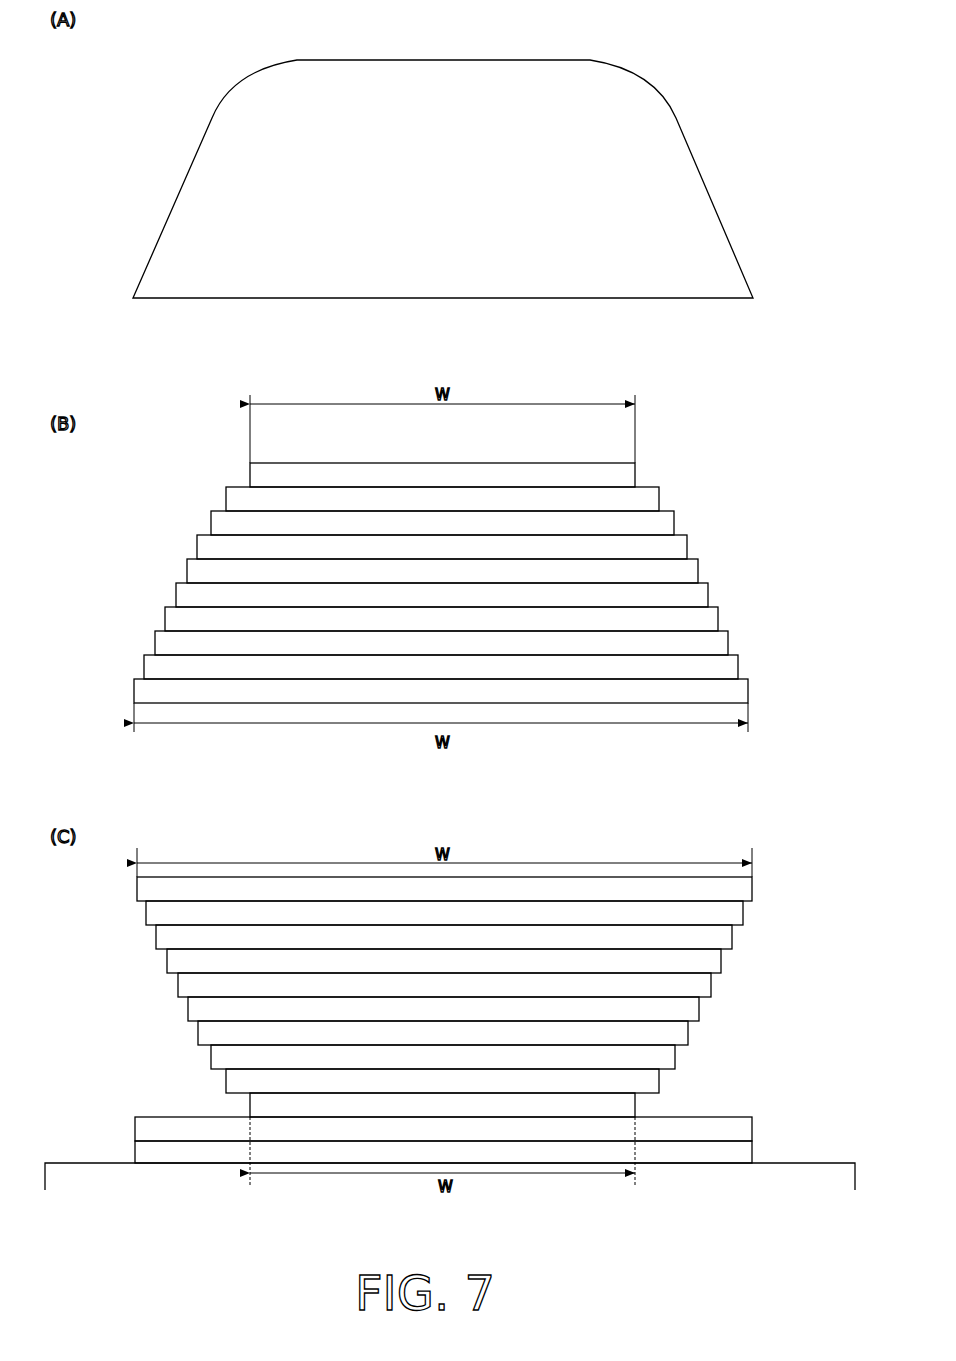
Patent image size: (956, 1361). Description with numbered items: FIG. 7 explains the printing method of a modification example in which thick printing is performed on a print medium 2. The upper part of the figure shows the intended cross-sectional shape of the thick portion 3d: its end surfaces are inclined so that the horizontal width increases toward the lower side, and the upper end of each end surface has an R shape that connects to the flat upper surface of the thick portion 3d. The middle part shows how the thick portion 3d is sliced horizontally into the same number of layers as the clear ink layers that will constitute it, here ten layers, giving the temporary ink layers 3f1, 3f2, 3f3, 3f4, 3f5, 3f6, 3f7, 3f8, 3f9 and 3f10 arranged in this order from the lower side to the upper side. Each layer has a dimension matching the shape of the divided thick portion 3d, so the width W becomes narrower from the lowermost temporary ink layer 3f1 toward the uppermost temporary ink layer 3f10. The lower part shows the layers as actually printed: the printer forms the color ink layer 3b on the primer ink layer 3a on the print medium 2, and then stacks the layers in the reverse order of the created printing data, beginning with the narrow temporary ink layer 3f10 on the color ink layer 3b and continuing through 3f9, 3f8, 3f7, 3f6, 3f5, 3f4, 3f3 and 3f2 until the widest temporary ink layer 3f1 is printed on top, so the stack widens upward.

The thick portion 3d is at (425, 60).
The temporary ink layer 3f1 is at (749, 694).
The temporary ink layer 3f2 is at (739, 670).
The temporary ink layer 3f3 is at (729, 646).
The temporary ink layer 3f4 is at (719, 622).
The temporary ink layer 3f5 is at (709, 598).
The temporary ink layer 3f6 is at (699, 574).
The temporary ink layer 3f7 is at (688, 550).
The temporary ink layer 3f8 is at (675, 526).
The temporary ink layer 3f9 is at (660, 502).
The temporary ink layer 3f10 is at (636, 478).
The color ink layer 3b is at (753, 1131).
The primer ink layer 3a is at (753, 1156).
The print medium 2 is at (88, 1163).